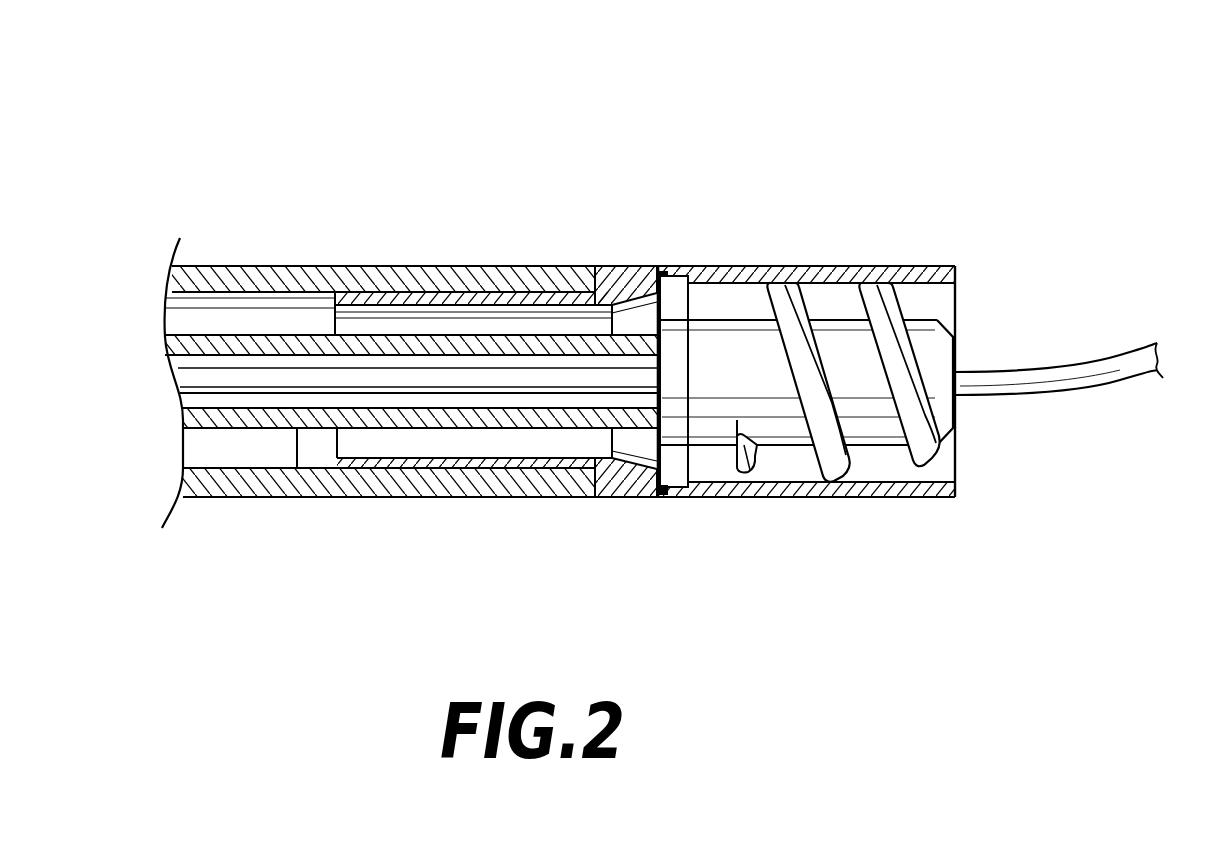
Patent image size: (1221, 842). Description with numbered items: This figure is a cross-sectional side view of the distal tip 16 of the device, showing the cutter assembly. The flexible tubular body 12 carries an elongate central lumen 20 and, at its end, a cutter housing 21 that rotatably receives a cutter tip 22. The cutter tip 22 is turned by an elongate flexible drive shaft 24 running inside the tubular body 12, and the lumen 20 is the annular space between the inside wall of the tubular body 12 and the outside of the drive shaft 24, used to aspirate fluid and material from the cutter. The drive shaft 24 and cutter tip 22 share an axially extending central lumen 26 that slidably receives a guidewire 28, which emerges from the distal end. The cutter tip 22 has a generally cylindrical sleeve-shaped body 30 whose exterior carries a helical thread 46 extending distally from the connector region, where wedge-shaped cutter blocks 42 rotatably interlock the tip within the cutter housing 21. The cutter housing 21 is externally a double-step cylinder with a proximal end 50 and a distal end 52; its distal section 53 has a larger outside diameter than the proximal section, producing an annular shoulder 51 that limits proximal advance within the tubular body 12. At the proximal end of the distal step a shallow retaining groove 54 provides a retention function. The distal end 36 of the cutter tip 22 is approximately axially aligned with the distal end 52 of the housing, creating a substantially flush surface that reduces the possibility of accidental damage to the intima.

The distal assembly 16 is at (680, 305).
The tubular body 12 is at (300, 266).
The central lumen 26 is at (236, 346).
The central lumen 20 is at (262, 467).
The drive shaft 24 is at (298, 468).
The proximal end 50 is at (372, 268).
The annular shoulder 51 is at (593, 470).
The cutter housing 21 is at (631, 266).
The distal section 53 is at (742, 266).
The distal end 52 is at (955, 248).
The cutter blocks 42 is at (678, 478).
The retaining groove 54 is at (673, 267).
The cylindrical body 30 is at (728, 392).
The cutter tip 22 is at (958, 353).
The helical thread 46 is at (830, 460).
The distal end 36 is at (948, 423).
The guidewire 28 is at (1121, 357).